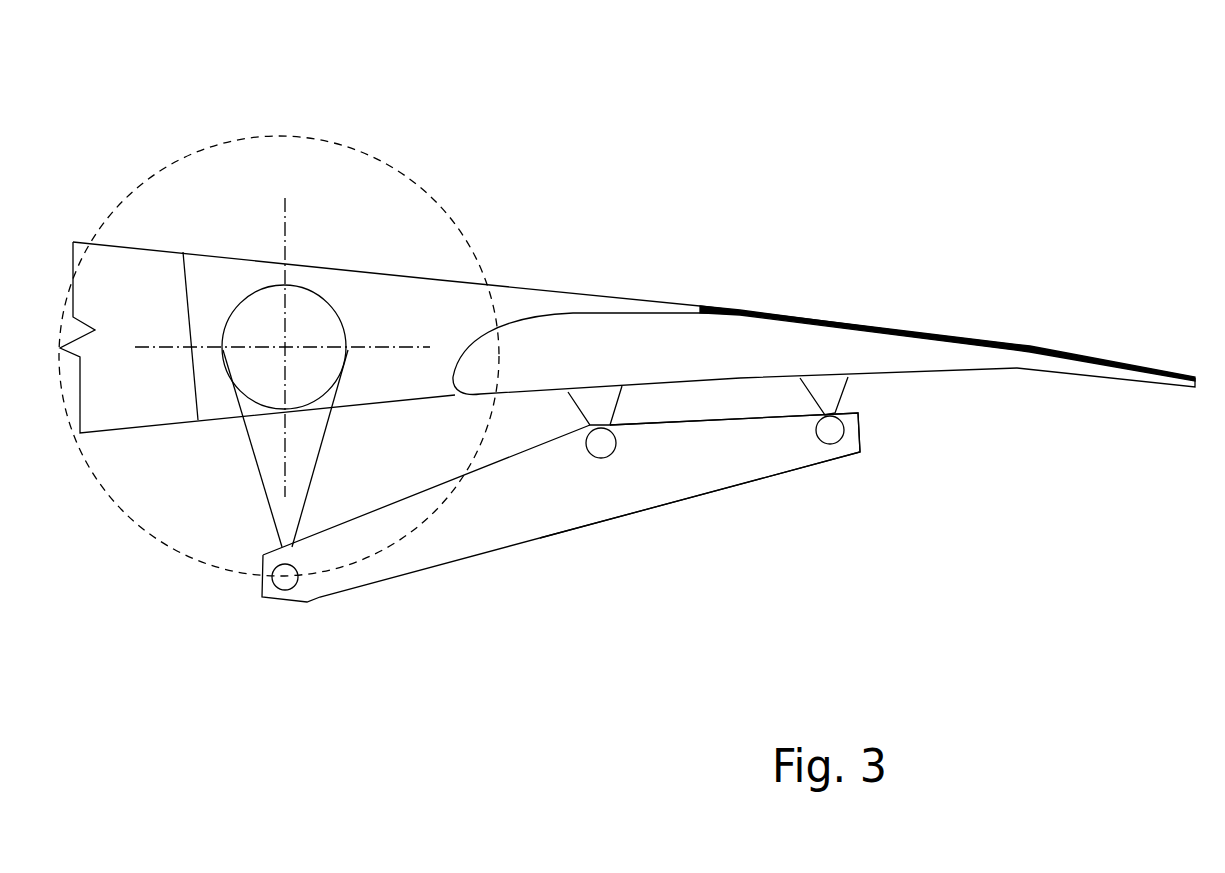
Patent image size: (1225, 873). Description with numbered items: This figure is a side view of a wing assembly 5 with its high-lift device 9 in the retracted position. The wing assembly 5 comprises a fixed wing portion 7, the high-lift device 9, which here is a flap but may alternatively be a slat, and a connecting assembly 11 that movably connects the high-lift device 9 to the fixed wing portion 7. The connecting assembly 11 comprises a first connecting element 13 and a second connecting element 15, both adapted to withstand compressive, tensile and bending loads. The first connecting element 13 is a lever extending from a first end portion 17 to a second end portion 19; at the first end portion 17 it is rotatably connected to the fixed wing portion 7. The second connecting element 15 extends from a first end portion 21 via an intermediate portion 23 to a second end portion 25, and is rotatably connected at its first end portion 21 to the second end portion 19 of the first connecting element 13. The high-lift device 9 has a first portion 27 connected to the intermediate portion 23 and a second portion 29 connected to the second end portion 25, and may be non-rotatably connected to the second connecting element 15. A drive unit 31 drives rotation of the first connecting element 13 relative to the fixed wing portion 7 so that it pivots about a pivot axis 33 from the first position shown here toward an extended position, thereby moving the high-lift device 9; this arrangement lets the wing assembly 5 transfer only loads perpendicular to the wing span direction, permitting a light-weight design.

The wing assembly 5 is at (540, 155).
The fixed wing portion 7 is at (528, 298).
The high-lift device 9 is at (742, 352).
The connecting assembly 11 is at (435, 646).
The first connecting element 13 is at (267, 473).
The second connecting element 15 is at (720, 472).
The first end portion 17 is at (252, 437).
The second end portion 19 is at (295, 515).
The first end portion 21 is at (323, 570).
The intermediate portion 23 is at (583, 507).
The second end portion 25 is at (845, 447).
The first portion 27 is at (583, 345).
The second portion 29 is at (833, 348).
The drive unit 31 is at (305, 325).
The pivot axis 33 is at (283, 340).